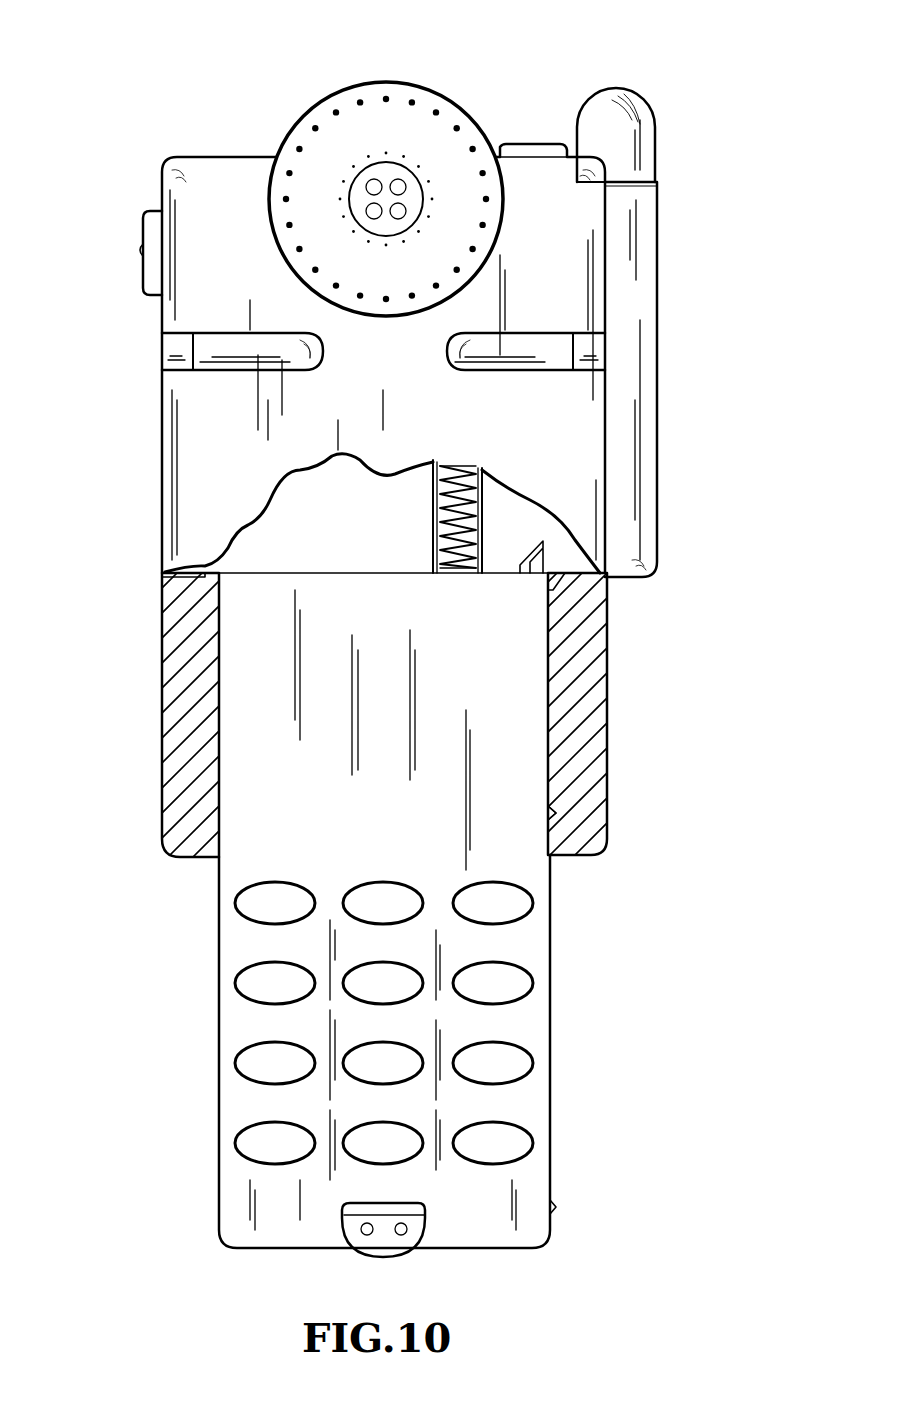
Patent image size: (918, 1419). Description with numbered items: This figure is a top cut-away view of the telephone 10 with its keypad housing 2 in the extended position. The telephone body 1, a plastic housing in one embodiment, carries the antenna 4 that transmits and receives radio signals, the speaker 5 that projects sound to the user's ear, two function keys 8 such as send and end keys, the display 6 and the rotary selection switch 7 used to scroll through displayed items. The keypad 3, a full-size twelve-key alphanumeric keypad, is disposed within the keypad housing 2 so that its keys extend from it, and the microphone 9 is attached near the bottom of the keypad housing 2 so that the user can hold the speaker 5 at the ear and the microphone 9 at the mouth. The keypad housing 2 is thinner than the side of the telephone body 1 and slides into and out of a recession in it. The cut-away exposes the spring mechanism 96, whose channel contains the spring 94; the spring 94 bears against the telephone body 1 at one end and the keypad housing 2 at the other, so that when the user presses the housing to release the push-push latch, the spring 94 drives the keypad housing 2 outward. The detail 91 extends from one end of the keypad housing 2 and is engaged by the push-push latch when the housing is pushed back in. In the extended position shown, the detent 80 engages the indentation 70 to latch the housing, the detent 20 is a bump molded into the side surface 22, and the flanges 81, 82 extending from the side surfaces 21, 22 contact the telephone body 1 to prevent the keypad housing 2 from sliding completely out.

The telephone 10 is at (108, 42).
The telephone body 1 is at (153, 434).
The keypad housing 2 is at (535, 944).
The keypad 3 is at (210, 883).
The antenna 4 is at (648, 104).
The speaker 5 is at (325, 98).
The display 6 is at (165, 620).
The selection switch 7 is at (145, 238).
The function keys 8 is at (252, 332).
The microphone 9 is at (410, 1256).
The detent 20 is at (555, 1207).
The side surface 21 is at (208, 1196).
The side surface 22 is at (563, 1103).
The indentation 70 is at (556, 815).
The detent 80 is at (543, 812).
The flange 81 is at (218, 577).
The flange 82 is at (550, 578).
The detail 91 is at (528, 550).
The spring 94 is at (437, 508).
The spring mechanism 96 is at (418, 522).